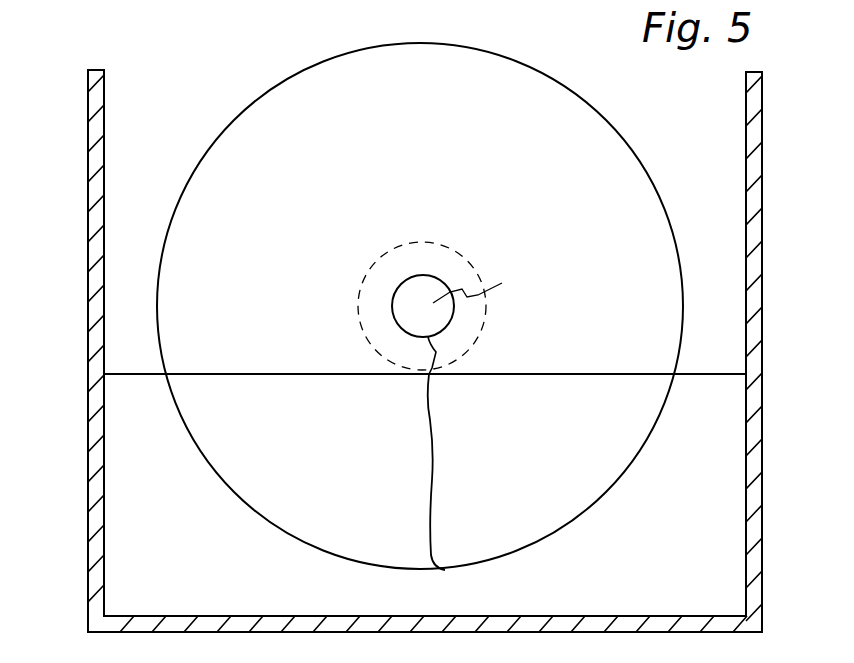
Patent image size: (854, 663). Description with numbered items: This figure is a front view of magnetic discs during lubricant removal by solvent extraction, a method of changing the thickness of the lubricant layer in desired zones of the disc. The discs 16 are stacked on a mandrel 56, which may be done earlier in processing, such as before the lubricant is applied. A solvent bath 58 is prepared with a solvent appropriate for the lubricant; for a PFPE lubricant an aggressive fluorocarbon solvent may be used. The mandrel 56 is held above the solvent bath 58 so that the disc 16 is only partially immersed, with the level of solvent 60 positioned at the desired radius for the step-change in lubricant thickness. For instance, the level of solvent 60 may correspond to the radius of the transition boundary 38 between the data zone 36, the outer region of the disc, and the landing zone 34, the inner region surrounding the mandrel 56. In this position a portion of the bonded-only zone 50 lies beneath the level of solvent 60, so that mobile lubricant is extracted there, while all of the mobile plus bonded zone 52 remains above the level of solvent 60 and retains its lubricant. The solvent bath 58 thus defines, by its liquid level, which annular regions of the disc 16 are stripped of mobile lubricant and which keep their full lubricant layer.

The disc 16 is at (558, 84).
The landing zone 34 is at (390, 249).
The data zone 36 is at (440, 198).
The transition boundary 38 is at (423, 242).
The bonded-only zone 50 is at (429, 466).
The mobile+bonded zone 52 is at (437, 353).
The mandrel 56 is at (487, 289).
The solvent bath 58 is at (88, 366).
The level of solvent 60 is at (292, 348).